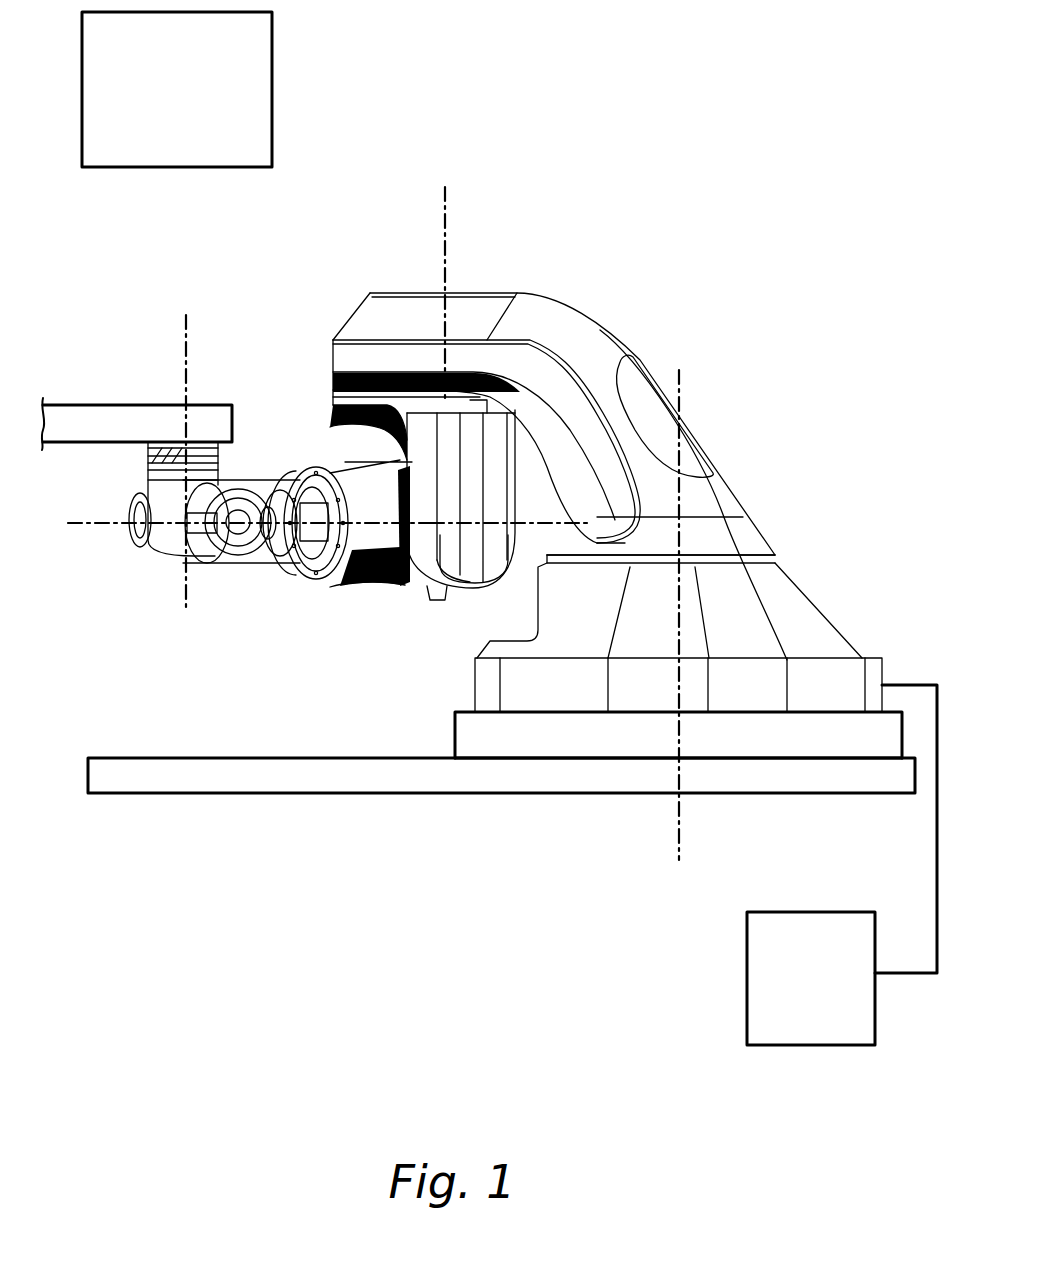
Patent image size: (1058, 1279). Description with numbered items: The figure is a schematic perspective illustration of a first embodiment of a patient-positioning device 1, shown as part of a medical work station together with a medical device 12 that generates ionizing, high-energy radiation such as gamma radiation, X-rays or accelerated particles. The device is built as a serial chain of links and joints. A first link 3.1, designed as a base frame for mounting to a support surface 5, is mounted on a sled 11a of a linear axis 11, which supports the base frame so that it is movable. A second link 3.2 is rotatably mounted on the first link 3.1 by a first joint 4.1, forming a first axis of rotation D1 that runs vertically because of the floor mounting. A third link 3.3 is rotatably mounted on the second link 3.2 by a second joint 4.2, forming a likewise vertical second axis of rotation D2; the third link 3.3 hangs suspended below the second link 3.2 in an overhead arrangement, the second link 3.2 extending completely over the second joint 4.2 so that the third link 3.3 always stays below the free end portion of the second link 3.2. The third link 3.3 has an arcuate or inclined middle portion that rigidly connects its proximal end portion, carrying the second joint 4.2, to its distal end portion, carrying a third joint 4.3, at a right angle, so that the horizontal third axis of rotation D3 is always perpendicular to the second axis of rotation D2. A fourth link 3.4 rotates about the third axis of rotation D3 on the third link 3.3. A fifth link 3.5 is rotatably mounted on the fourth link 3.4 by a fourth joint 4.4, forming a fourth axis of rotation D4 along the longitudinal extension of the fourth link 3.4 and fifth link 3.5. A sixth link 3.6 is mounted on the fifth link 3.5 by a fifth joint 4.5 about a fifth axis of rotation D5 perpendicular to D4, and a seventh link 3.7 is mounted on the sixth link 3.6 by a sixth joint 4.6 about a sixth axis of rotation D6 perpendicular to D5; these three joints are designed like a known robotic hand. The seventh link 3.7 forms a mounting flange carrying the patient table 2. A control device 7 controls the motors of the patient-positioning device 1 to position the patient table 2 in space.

The patient-positioning device 1 is at (755, 242).
The patient table 2 is at (87, 420).
The first link 3.1 is at (817, 622).
The second link 3.2 is at (590, 333).
The third link 3.3 is at (507, 560).
The fourth link 3.4 is at (363, 570).
The fifth link 3.5 is at (260, 543).
The sixth link 3.6 is at (153, 518).
The seventh link 3.7 is at (160, 443).
The first joint 4.1 is at (773, 560).
The second joint 4.2 is at (382, 400).
The third joint 4.3 is at (403, 490).
The fourth joint 4.4 is at (270, 513).
The fifth joint 4.5 is at (147, 513).
The sixth joint 4.6 is at (217, 458).
The support surface 5 is at (464, 712).
The control device 7 is at (760, 965).
The linear axis 11 is at (271, 775).
The sled 11a is at (475, 740).
The medical device 12 is at (157, 102).
The first axis of rotation D1 is at (680, 810).
The second axis of rotation D2 is at (445, 243).
The third axis of rotation D3 is at (373, 522).
The fourth axis of rotation D4 is at (247, 525).
The fifth axis of rotation D5 is at (85, 523).
The sixth axis of rotation D6 is at (198, 444).